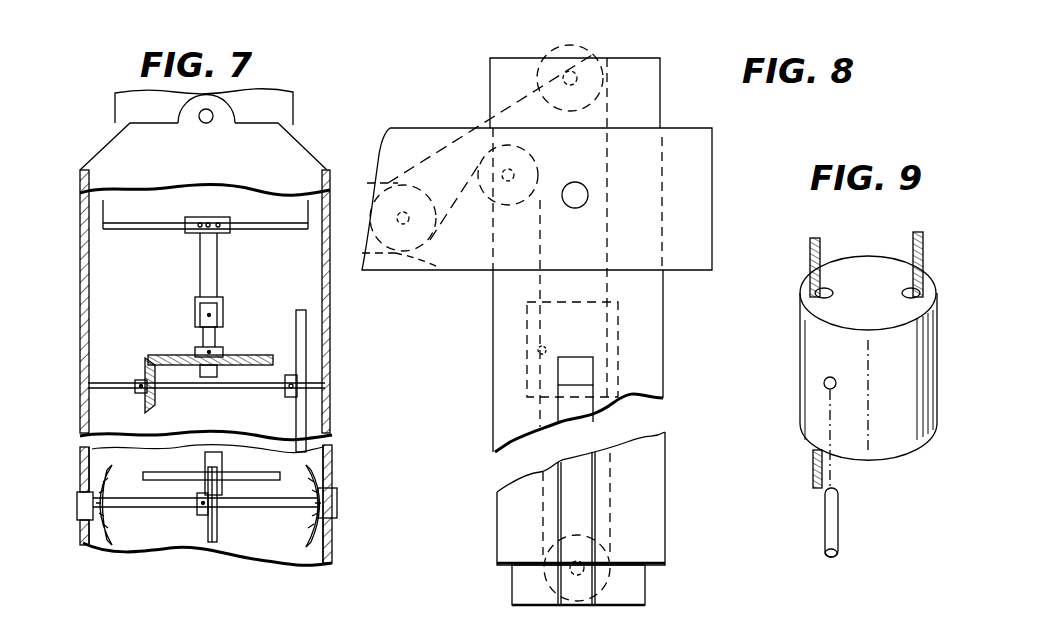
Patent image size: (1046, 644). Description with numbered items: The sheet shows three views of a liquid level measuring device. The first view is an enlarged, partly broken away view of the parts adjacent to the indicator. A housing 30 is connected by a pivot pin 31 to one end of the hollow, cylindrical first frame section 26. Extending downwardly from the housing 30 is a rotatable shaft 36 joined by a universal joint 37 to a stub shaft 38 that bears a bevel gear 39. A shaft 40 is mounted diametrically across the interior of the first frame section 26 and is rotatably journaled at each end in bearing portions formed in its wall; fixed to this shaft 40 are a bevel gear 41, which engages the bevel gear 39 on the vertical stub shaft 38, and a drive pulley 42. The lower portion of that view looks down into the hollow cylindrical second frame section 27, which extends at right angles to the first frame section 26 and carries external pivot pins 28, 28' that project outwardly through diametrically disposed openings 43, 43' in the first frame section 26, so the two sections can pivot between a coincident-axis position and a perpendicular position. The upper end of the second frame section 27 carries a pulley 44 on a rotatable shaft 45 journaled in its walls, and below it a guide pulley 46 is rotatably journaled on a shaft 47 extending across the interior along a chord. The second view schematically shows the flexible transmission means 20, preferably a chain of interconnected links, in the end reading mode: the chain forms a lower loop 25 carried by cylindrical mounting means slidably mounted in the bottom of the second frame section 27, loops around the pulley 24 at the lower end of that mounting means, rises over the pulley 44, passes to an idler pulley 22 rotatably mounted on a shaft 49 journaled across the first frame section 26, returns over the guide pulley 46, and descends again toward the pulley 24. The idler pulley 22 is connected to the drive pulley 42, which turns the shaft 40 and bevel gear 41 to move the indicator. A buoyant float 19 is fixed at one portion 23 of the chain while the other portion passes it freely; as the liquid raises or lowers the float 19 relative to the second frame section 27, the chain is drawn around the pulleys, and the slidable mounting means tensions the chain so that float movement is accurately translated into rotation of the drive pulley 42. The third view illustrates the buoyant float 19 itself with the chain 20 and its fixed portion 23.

In FIG. 8, the buoyant float 19 is at (618, 322).
In FIG. 9, the buoyant float 19 is at (878, 448).
In FIG. 8, the flexible transmission means 20 is at (610, 487).
In FIG. 9, the flexible transmission means 20 is at (820, 248).
In FIG. 8, the idler pulley 22 is at (438, 268).
In FIG. 8, the portion of the chain 23 is at (545, 347).
In FIG. 9, the portion of the chain 23 is at (840, 517).
In FIG. 8, the pulley 24 is at (560, 592).
In FIG. 8, the lower loop 25 is at (605, 590).
In FIG. 7, the first frame section 26 is at (313, 150).
In FIG. 8, the first frame section 26 is at (712, 142).
In FIG. 7, the second frame section 27 is at (83, 453).
In FIG. 8, the second frame section 27 is at (660, 72).
In FIG. 7, the external pivot pin 28 is at (362, 503).
In FIG. 8, the external pivot pin 28 is at (587, 227).
In FIG. 7, the external pivot pin 28' is at (78, 538).
In FIG. 7, the housing 30 is at (293, 103).
In FIG. 7, the pivot pin 31 is at (210, 118).
In FIG. 7, the rotatable shaft 36 is at (218, 262).
In FIG. 7, the universal joint 37 is at (227, 310).
In FIG. 7, the stub shaft 38 is at (218, 340).
In FIG. 7, the bevel gear 39 is at (173, 355).
In FIG. 7, the shaft 40 is at (110, 382).
In FIG. 7, the bevel gear 41 is at (157, 400).
In FIG. 7, the drive pulley 42 is at (308, 337).
In FIG. 7, the opening 43 is at (343, 489).
In FIG. 7, the opening 43' is at (113, 526).
In FIG. 7, the pulley 44 is at (217, 518).
In FIG. 8, the pulley 44 is at (590, 57).
In FIG. 7, the rotatable shaft 45 is at (270, 507).
In FIG. 7, the guide pulley 46 is at (222, 465).
In FIG. 8, the guide pulley 46 is at (510, 203).
In FIG. 7, the shaft 47 is at (188, 472).
In FIG. 8, the shaft 49 is at (413, 222).